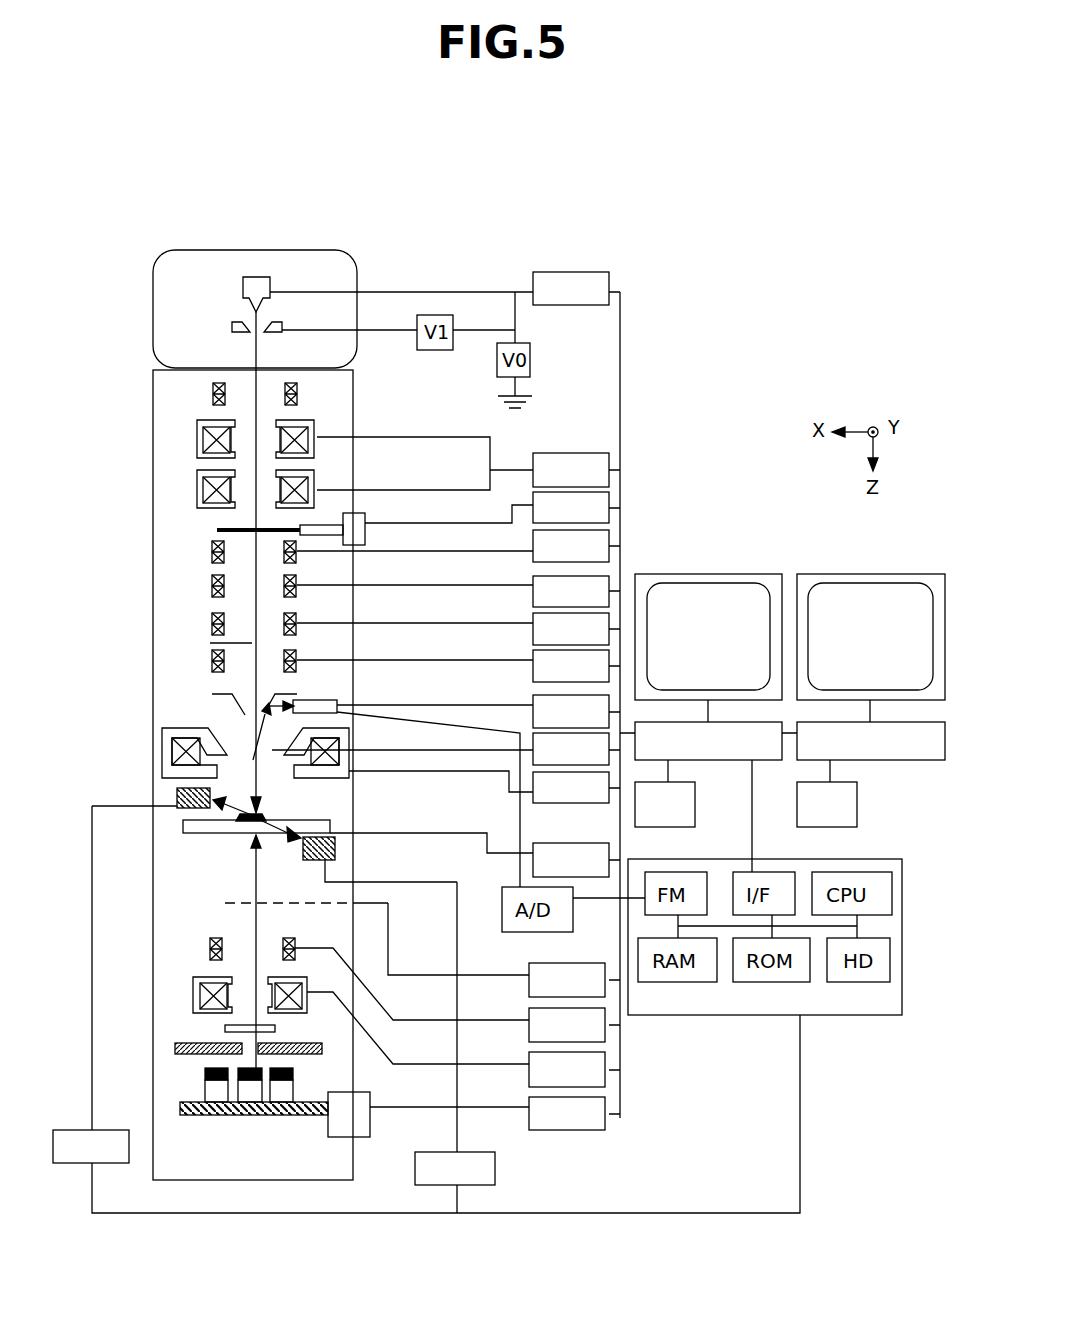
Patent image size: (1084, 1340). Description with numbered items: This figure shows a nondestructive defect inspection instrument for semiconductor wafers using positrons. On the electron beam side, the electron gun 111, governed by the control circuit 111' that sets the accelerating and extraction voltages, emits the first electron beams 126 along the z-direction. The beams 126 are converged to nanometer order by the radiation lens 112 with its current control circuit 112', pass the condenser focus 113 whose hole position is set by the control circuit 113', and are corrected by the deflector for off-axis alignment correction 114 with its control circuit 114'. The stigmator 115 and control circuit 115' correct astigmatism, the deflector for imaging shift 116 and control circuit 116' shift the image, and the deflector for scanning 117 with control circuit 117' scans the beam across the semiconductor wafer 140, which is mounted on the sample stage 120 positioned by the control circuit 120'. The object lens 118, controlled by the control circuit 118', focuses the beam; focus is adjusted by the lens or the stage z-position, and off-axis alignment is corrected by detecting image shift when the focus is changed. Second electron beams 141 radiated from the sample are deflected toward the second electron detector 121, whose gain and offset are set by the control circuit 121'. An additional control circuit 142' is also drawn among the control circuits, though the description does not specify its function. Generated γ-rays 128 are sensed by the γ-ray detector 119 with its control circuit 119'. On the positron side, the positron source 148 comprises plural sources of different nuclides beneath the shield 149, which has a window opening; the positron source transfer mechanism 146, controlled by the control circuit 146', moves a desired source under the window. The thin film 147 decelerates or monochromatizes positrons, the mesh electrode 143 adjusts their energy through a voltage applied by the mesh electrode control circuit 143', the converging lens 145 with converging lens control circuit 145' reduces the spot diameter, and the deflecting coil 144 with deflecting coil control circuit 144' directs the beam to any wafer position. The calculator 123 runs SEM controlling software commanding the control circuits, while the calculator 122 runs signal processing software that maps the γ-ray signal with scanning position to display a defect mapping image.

The electron gun 111 is at (178, 284).
The control circuit 111' is at (571, 288).
The radiation lens 112 is at (200, 451).
The control circuit 112' is at (571, 470).
The condenser focus 113 is at (226, 511).
The control circuit 113' is at (571, 507).
The deflector for off-axis alignment correction 114 is at (191, 540).
The control circuit 114' is at (571, 546).
The stigmator 115 is at (191, 575).
The control circuit 115' is at (571, 591).
The deflector for imaging shift 116 is at (191, 613).
The control circuit 116' is at (571, 629).
The deflector for scanning 117 is at (191, 654).
The control circuit 117' is at (571, 666).
The object lens 118 is at (218, 745).
The control circuit 118' is at (571, 787).
The γ-ray detector 119 is at (211, 806).
The control circuit 119' is at (274, 1157).
The sample stage 120 is at (208, 808).
The control circuit 120' is at (571, 860).
The second electron detector 121 is at (353, 696).
The control circuit for the second electron detector 121' is at (571, 711).
The calculator 122 is at (890, 760).
The calculator 123 is at (727, 760).
The first electron beams 126 is at (210, 643).
The generated γ-rays 128 is at (237, 811).
The semiconductor wafer 140 is at (233, 834).
The second electron beams 141 is at (253, 730).
The deflector power supply 142' is at (571, 749).
The mesh electrode 143 is at (295, 916).
The mesh electrode control circuit 143' is at (567, 980).
The deflecting coil 144 is at (196, 951).
The deflecting coil control circuit 144' is at (567, 1025).
The converging lens 145 is at (202, 995).
The converging lens control circuit 145' is at (567, 1069).
The positron source transfer mechanism 146 is at (309, 1132).
The control circuit of positron source transfer mechanism 146' is at (567, 1113).
The thin film 147 is at (225, 1029).
The positron source 148 is at (205, 1086).
The shield 149 is at (321, 1056).